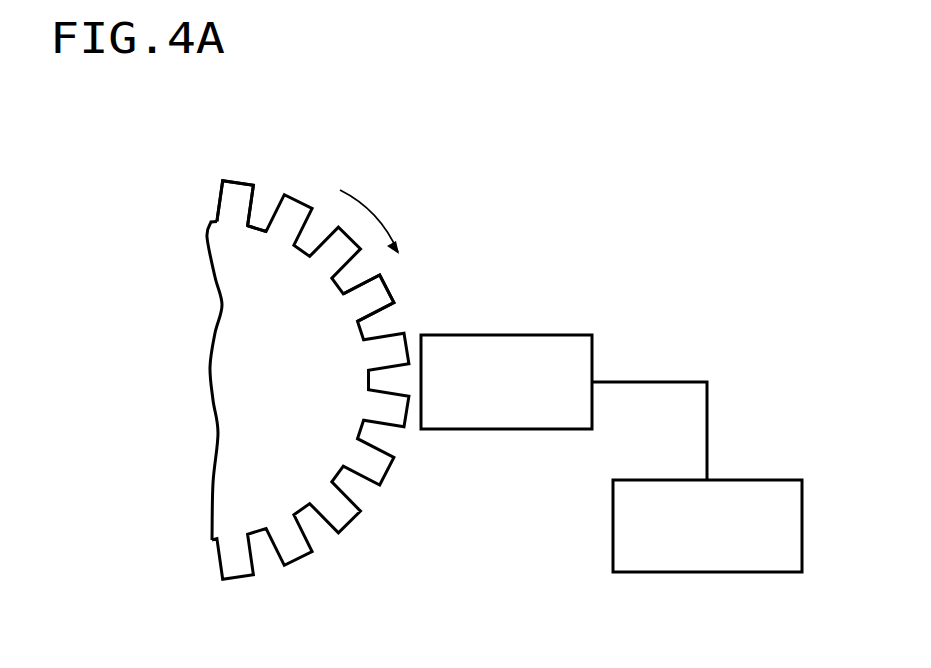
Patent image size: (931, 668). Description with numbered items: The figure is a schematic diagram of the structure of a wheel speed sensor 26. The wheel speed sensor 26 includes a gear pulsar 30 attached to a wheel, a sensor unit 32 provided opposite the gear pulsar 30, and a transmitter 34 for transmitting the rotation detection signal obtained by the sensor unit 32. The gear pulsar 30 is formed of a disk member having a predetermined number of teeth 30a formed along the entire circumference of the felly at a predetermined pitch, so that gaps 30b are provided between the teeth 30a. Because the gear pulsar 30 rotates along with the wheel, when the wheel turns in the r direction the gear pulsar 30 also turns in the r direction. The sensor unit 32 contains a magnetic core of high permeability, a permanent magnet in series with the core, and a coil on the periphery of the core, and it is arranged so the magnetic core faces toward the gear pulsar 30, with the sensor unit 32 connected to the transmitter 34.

The wheel speed sensor 26 is at (465, 170).
The gear pulsar 30 is at (237, 375).
The teeth 30a is at (236, 196).
The gaps 30b is at (262, 207).
The sensor unit 32 is at (561, 334).
The transmitter 34 is at (740, 479).